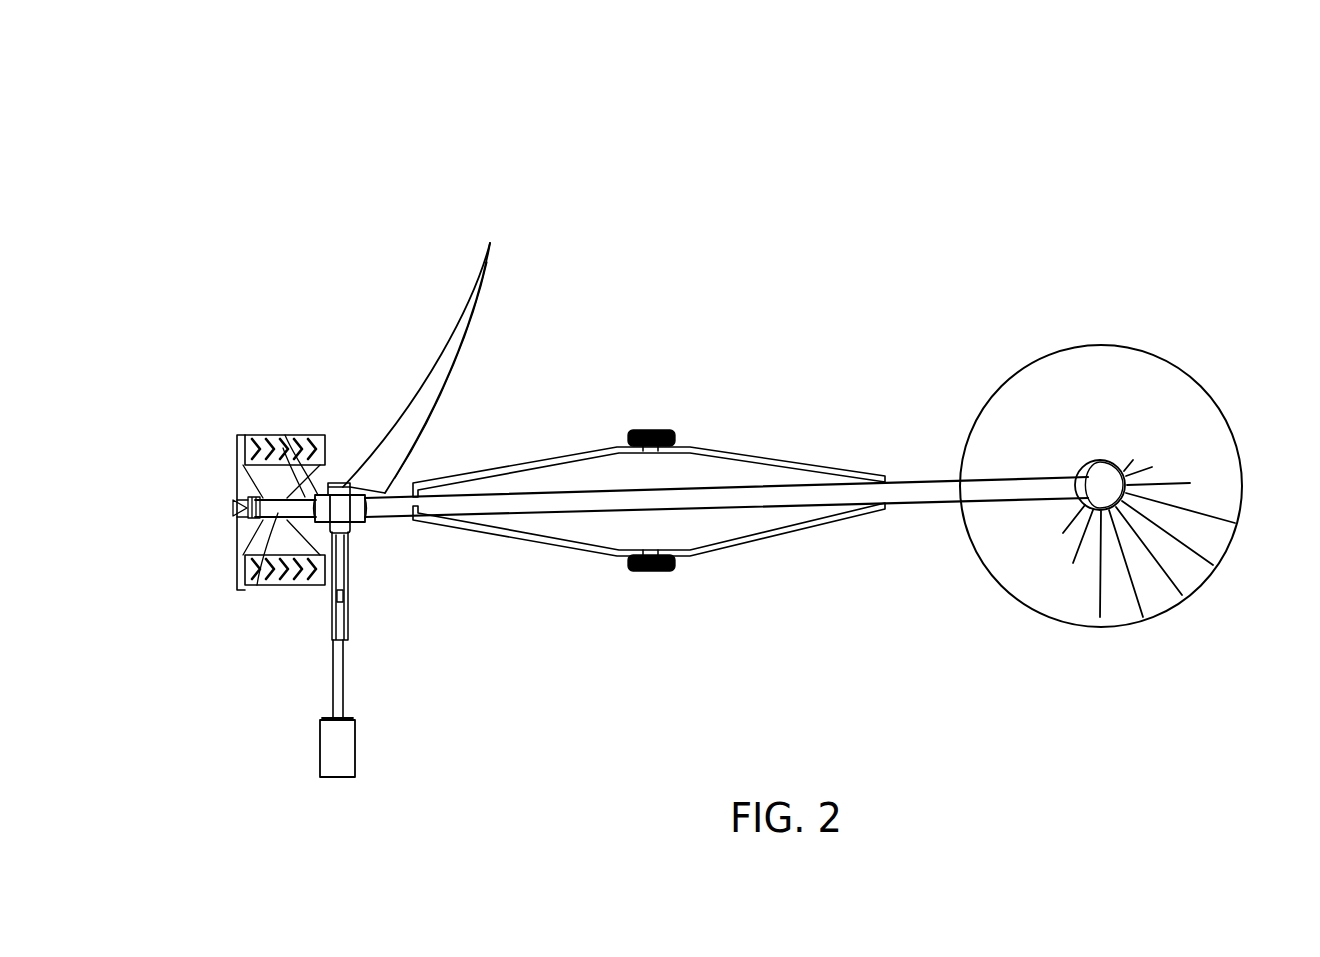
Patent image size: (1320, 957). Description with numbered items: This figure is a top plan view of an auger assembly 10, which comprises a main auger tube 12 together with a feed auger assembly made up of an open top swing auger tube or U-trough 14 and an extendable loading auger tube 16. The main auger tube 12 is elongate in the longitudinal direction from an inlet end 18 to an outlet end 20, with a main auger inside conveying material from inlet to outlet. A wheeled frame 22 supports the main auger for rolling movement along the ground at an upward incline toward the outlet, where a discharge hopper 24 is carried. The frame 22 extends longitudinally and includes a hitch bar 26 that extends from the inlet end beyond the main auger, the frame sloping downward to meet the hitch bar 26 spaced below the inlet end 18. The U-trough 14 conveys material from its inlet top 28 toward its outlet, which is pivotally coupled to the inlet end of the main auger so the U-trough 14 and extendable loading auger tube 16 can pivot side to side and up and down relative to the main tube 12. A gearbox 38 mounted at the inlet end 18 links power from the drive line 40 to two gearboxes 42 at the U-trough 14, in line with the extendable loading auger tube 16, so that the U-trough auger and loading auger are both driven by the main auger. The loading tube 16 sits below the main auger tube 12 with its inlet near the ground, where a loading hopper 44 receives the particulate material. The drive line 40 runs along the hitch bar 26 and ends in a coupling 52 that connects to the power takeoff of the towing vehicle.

The auger assembly 10 is at (812, 128).
The main auger tube 12 is at (908, 483).
The U-trough 14 is at (348, 557).
The extendable loading auger tube 16 is at (346, 673).
The inlet end 18 is at (380, 493).
The outlet end 20 is at (1043, 490).
The wheeled frame 22 is at (808, 525).
The discharge hopper 24 is at (1106, 468).
The hitch bar 26 is at (341, 483).
The inlet top 28 is at (349, 595).
The gearbox 38 is at (327, 480).
The drive line 40 is at (292, 515).
The gearboxes 42 is at (440, 342).
The loading hopper 44 is at (346, 823).
The coupling 52 is at (243, 535).